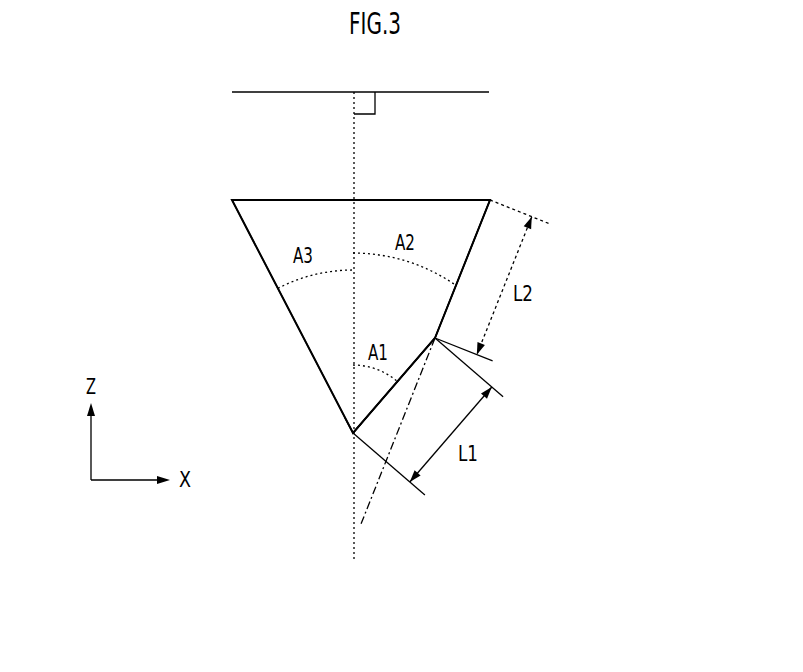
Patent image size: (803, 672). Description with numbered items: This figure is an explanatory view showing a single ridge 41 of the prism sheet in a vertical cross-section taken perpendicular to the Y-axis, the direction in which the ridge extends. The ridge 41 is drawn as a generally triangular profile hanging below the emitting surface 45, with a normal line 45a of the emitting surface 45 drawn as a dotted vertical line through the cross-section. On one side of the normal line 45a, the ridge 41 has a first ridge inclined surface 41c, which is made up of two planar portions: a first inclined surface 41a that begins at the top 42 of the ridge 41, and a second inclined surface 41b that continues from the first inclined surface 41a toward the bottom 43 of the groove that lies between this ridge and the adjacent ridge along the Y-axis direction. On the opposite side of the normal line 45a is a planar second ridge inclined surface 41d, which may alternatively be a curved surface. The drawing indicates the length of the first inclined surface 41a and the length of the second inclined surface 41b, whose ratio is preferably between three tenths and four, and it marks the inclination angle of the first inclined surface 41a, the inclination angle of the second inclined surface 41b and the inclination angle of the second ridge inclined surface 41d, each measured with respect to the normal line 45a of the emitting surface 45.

The emitting surface 45 is at (448, 92).
The normal line of the emitting surface 45a is at (353, 197).
The ridge 41 is at (490, 165).
The bottom of a groove 43 is at (232, 200).
The second ridge inclined surface 41d is at (258, 254).
The second inclined surface 41b is at (450, 310).
The first inclined surface 41a is at (418, 358).
The first ridge inclined surface 41c is at (578, 333).
The top 42 is at (352, 435).